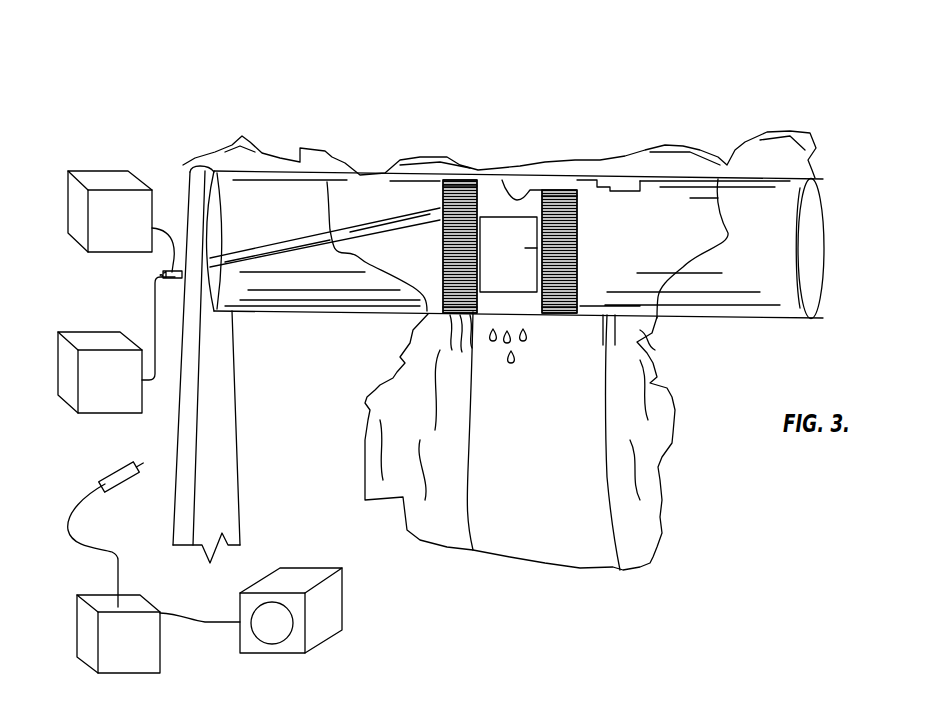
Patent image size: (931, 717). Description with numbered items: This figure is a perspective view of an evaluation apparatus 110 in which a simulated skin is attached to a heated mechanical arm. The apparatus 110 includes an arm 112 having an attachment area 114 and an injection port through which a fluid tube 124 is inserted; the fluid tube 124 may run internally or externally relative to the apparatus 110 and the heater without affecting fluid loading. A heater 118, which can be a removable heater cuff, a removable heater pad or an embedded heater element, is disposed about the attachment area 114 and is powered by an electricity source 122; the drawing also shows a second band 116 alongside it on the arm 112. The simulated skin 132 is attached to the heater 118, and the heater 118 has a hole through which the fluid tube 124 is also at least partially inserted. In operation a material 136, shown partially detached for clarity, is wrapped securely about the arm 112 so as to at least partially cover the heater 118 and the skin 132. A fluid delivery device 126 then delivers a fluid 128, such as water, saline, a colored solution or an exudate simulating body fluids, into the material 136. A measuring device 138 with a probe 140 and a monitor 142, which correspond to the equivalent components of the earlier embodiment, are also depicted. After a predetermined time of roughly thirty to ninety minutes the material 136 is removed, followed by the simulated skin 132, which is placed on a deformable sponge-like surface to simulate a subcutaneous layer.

The evaluation apparatus 110 is at (385, 120).
The arm 112 is at (182, 209).
The attachment area 114 is at (433, 198).
The second band 116 is at (559, 251).
The heater 118 is at (528, 207).
The electricity source 122 is at (136, 232).
The fluid tube 124 is at (360, 228).
The fluid delivery device 126 is at (133, 394).
The fluid 128 is at (530, 332).
The simulated skin 132 is at (525, 248).
The material 136 is at (551, 487).
The measuring device 138 is at (145, 657).
The probe 140 is at (114, 467).
The monitor 142 is at (341, 627).